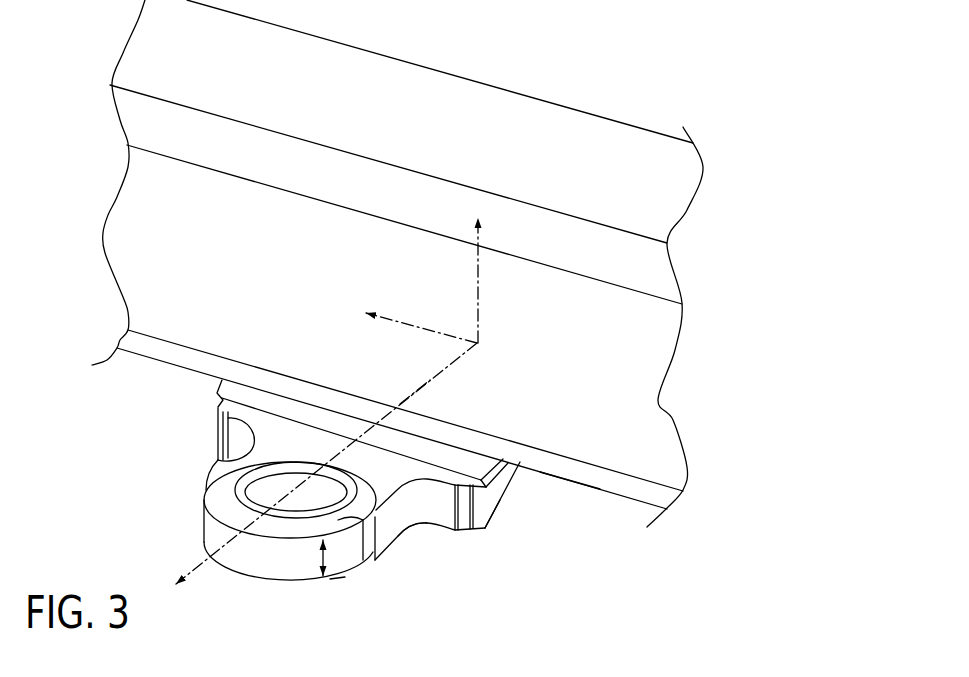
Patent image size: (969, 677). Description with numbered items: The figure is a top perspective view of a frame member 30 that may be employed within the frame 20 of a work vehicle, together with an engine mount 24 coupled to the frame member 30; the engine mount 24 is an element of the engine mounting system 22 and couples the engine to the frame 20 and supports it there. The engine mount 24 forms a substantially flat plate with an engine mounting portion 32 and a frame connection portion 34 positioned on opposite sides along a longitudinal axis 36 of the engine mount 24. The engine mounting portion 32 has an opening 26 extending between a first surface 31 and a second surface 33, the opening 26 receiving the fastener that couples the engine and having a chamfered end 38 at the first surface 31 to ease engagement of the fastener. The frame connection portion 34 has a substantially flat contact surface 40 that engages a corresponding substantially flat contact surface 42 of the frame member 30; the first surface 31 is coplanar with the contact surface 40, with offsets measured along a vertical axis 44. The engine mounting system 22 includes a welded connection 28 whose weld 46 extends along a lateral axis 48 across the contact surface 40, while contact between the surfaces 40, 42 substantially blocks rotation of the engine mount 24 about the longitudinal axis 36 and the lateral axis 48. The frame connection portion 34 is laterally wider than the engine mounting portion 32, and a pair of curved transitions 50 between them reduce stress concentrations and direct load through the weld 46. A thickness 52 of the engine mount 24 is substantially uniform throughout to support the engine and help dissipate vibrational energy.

The frame 20 is at (515, 62).
The engine mounting system 22 is at (500, 514).
The engine mount 24 is at (253, 580).
The opening 26 is at (250, 493).
The welded connection 28 is at (346, 386).
The frame member 30 is at (652, 452).
The first surface 31 is at (363, 521).
The engine mounting portion 32 is at (382, 563).
The second surface 33 is at (335, 586).
The frame connection portion 34 is at (527, 545).
The longitudinal axis 36 is at (440, 377).
The chamfer 38 is at (257, 473).
The substantially flat contact surface 40 is at (220, 405).
The substantially flat contact surface 42 is at (565, 490).
The vertical axis 44 is at (482, 285).
The weld 46 is at (283, 405).
The lateral axis 48 is at (423, 327).
The curved transitions 50 is at (200, 451).
The thickness 52 is at (322, 557).